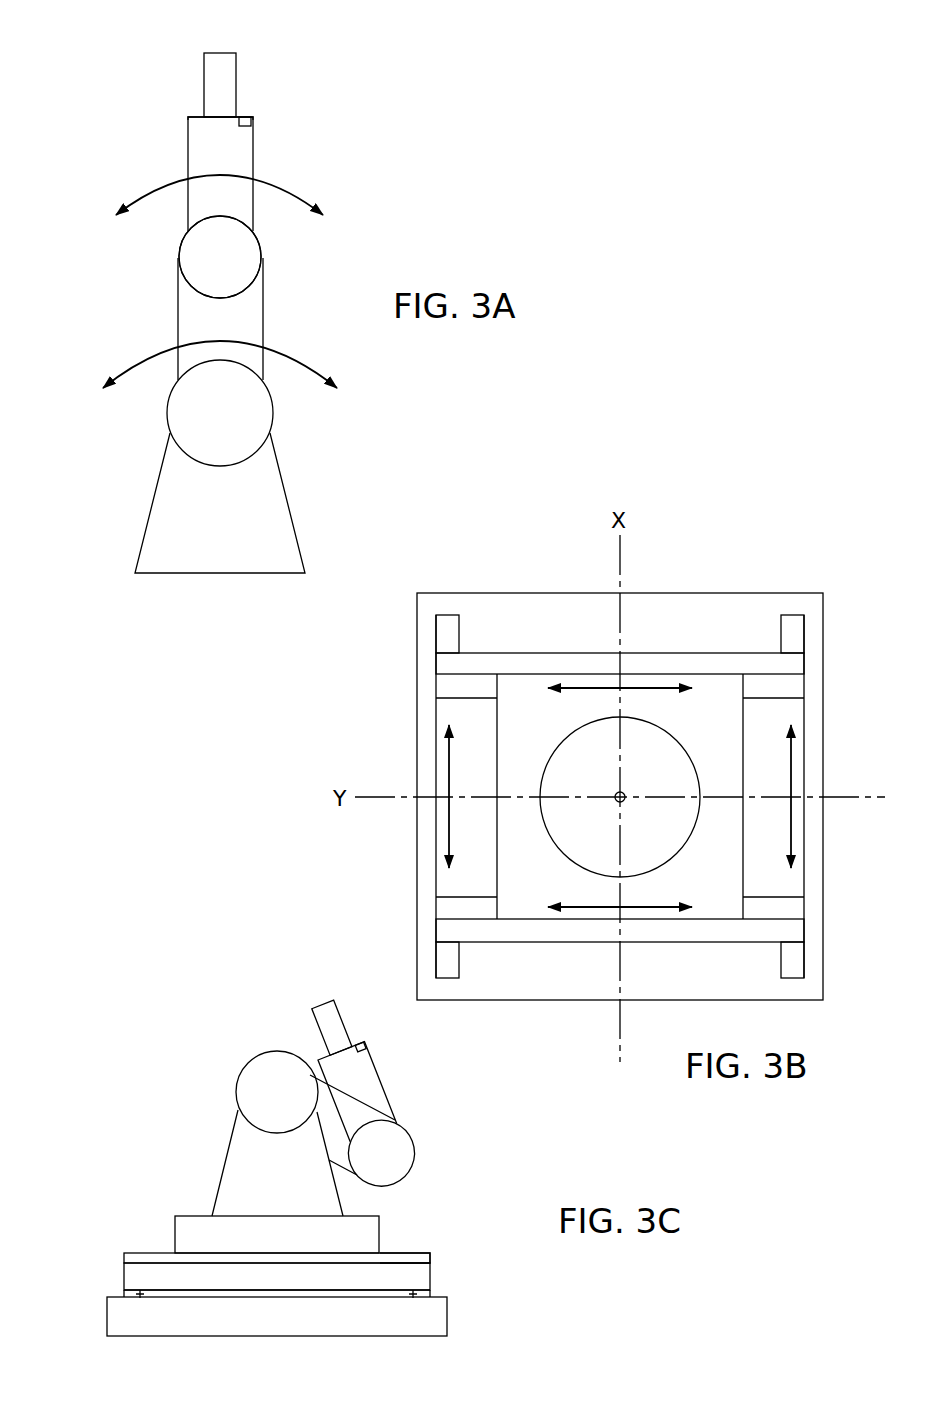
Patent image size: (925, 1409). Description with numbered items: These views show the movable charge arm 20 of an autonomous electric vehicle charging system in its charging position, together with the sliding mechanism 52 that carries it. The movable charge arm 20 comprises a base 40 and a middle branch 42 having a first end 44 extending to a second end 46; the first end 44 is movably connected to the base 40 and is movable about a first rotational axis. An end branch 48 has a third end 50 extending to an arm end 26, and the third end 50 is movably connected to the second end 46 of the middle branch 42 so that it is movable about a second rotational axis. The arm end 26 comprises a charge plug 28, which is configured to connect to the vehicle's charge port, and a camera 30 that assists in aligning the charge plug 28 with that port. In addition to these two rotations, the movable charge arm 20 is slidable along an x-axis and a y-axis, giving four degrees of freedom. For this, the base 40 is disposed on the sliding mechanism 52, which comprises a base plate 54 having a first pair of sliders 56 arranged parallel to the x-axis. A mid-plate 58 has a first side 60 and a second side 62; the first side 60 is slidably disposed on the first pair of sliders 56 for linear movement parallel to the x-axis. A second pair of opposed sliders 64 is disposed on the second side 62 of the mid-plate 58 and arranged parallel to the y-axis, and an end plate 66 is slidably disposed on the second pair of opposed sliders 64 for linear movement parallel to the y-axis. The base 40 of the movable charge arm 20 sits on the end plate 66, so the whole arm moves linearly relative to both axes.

In FIG. 3A, the movable charge arm 20 is at (143, 55).
In FIG. 3C, the movable charge arm 20 is at (272, 1160).
In FIG. 3A, the arm end 26 is at (198, 117).
In FIG. 3A, the charge plug 28 is at (237, 80).
In FIG. 3A, the camera 30 is at (253, 121).
In FIG. 3A, the base 40 is at (152, 505).
In FIG. 3A, the middle branch 42 is at (178, 316).
In FIG. 3A, the first end 44 is at (220, 360).
In FIG. 3A, the second end 46 is at (220, 298).
In FIG. 3A, the end branch 48 is at (187, 153).
In FIG. 3A, the third end 50 is at (220, 216).
In FIG. 3B, the sliding mechanism 52 is at (725, 542).
In FIG. 3C, the sliding mechanism 52 is at (93, 1225).
In FIG. 3B, the base plate 54 is at (417, 663).
In FIG. 3C, the base plate 54 is at (322, 1333).
In FIG. 3B, the first pair of sliders 56 is at (447, 625).
In FIG. 3C, the first pair of sliders 56 is at (142, 1297).
In FIG. 3B, the mid-plate 58 is at (773, 713).
In FIG. 3C, the mid-plate 58 is at (430, 1275).
In FIG. 3C, the first side 60 is at (228, 1297).
In FIG. 3C, the second side 62 is at (407, 1262).
In FIG. 3B, the second pair of opposed sliders 64 is at (804, 688).
In FIG. 3C, the second pair of opposed sliders 64 is at (163, 1253).
In FIG. 3B, the end plate 66 is at (533, 894).
In FIG. 3C, the end plate 66 is at (270, 1250).